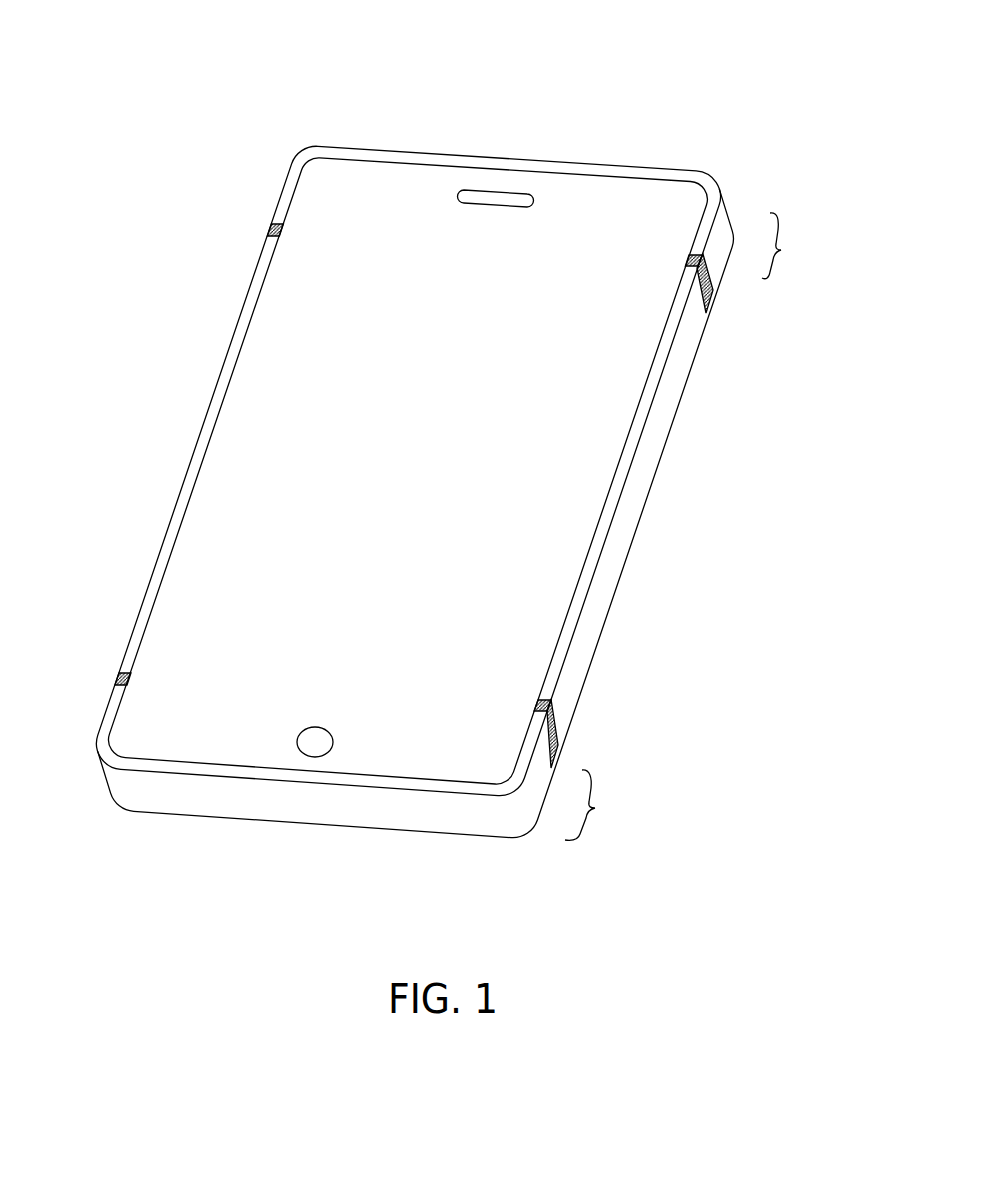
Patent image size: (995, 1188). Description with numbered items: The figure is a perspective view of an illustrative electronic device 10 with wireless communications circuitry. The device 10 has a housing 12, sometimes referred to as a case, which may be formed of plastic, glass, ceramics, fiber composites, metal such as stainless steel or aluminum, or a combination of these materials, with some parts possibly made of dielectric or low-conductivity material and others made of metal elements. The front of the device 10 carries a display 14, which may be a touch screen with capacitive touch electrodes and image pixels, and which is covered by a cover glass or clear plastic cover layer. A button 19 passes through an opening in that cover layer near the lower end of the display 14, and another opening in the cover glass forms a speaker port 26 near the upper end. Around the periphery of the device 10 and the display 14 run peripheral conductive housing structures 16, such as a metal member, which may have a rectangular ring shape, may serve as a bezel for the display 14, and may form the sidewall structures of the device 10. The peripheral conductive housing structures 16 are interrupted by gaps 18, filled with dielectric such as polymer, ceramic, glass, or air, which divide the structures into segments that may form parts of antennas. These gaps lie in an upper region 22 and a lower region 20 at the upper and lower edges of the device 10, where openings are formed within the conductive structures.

The electronic device 10 is at (714, 72).
The housing 12 is at (463, 491).
The display 14 is at (385, 187).
The peripheral conductive housing structures 16 is at (645, 462).
The gaps 18 is at (272, 228).
The button 19 is at (315, 757).
The region 20 is at (597, 805).
The region 22 is at (789, 246).
The speaker port 26 is at (497, 192).